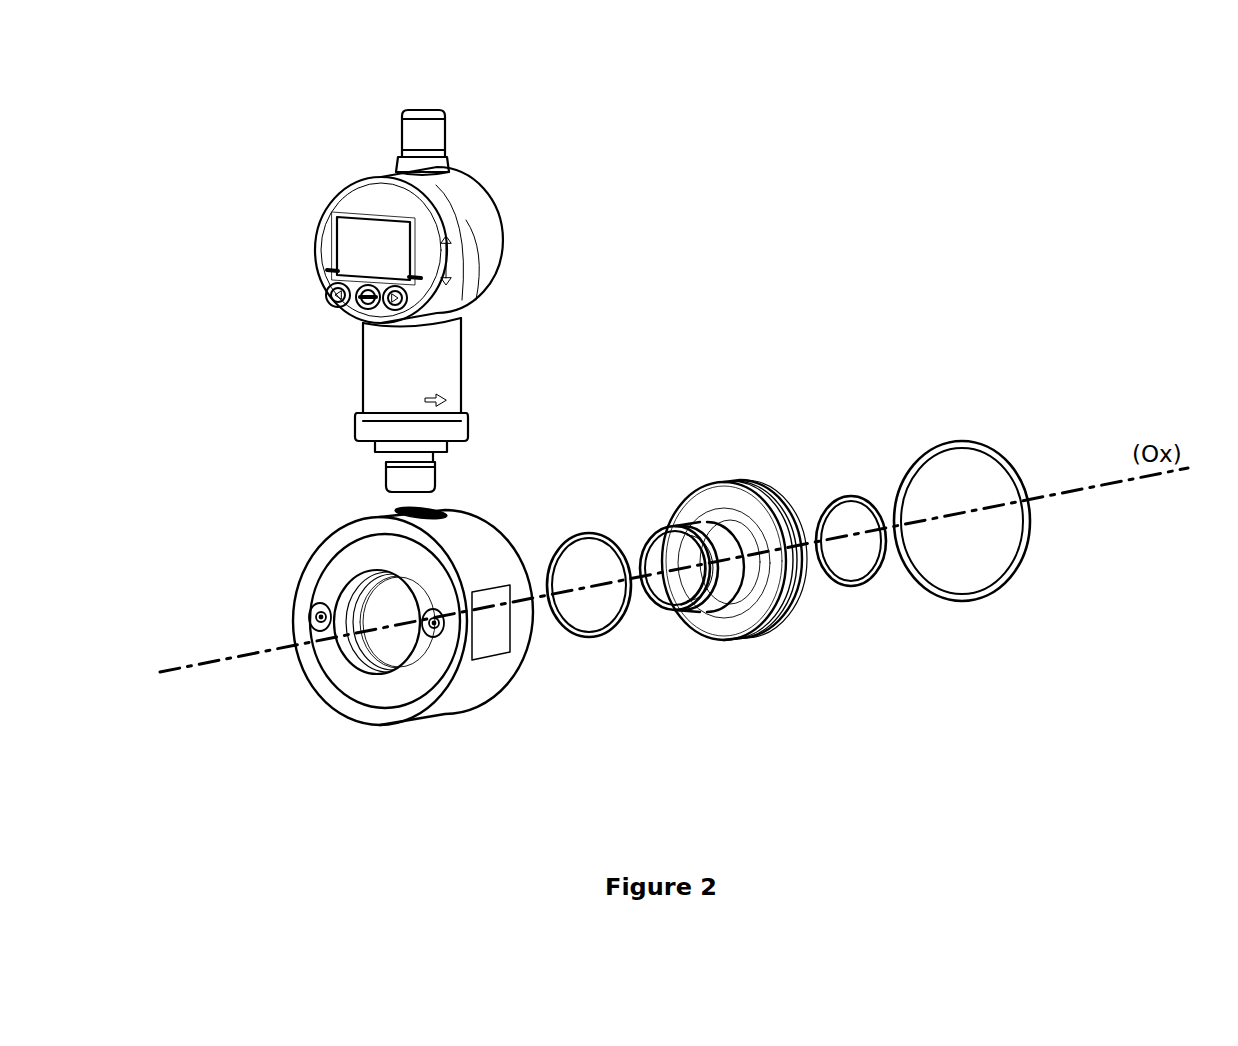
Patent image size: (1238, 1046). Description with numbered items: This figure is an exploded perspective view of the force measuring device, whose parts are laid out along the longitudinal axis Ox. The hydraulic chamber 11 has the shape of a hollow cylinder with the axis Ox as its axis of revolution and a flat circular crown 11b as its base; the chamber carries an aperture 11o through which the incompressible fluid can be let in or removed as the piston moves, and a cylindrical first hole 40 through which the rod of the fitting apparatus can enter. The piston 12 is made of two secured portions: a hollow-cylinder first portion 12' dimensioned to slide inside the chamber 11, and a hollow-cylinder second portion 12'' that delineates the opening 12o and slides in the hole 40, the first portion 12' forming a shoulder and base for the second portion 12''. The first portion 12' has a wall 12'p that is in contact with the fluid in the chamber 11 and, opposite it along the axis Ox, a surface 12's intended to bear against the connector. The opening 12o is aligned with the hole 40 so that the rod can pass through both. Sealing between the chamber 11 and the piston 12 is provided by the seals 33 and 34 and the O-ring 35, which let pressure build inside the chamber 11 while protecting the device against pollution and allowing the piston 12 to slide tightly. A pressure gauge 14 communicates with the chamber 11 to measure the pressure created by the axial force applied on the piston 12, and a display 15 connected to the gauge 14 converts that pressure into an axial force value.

The hydraulic chamber 11 is at (307, 520).
The aperture 11o is at (387, 505).
The crown 11b is at (340, 575).
The piston 12 is at (738, 438).
The first portion 12' is at (815, 600).
The wall 12'p is at (724, 623).
The surface 12's is at (799, 508).
The second portion 12'' is at (698, 428).
The opening 12o is at (692, 578).
The pressure gauge 14 is at (502, 190).
The display 15 is at (357, 247).
The seal 33 is at (574, 533).
The seal 34 is at (931, 443).
The O-ring 35 is at (870, 587).
The first hole 40 is at (366, 615).